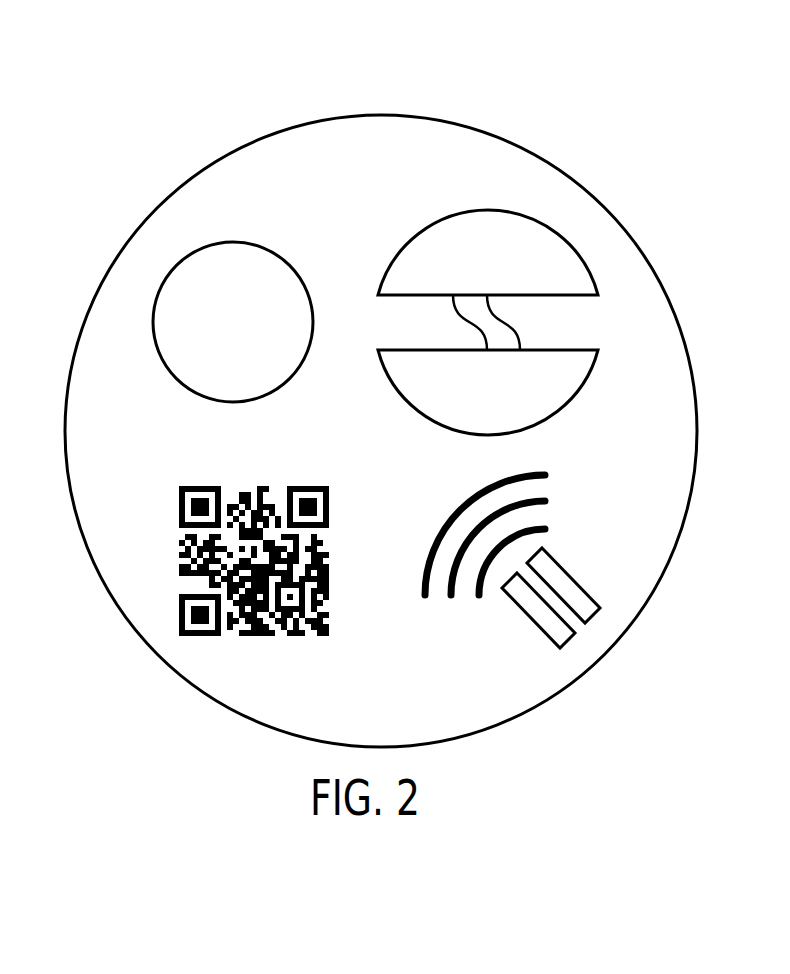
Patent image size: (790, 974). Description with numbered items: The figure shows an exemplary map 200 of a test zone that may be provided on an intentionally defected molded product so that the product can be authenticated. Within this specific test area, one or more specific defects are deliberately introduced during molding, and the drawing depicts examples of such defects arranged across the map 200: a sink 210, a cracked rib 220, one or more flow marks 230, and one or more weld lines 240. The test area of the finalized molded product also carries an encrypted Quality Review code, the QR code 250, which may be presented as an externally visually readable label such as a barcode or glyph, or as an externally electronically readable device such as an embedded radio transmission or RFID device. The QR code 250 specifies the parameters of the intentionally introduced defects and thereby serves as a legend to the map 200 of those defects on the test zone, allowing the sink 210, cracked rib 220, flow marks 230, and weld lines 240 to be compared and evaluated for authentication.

The map 200 is at (123, 137).
The sink 210 is at (258, 243).
The cracked rib 220 is at (434, 318).
The flow marks 230 is at (564, 493).
The weld lines 240 is at (509, 626).
The encrypted Quality Review (QR) code 250 is at (168, 463).